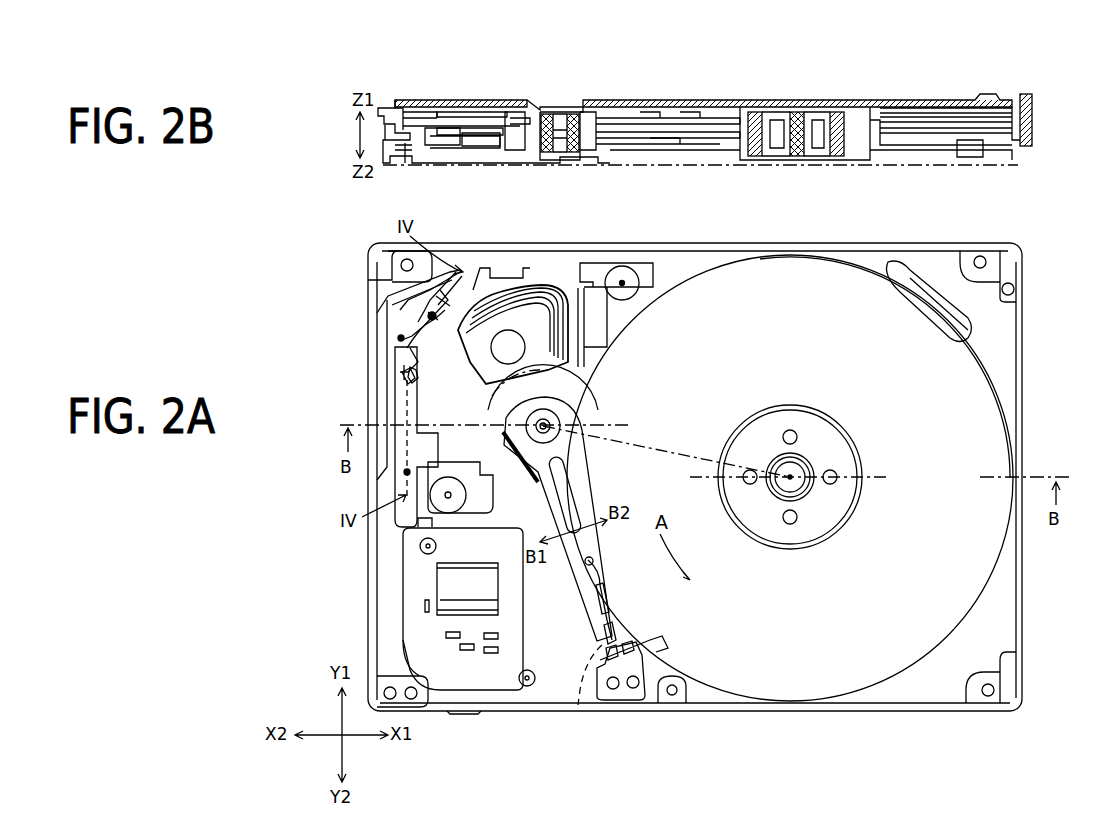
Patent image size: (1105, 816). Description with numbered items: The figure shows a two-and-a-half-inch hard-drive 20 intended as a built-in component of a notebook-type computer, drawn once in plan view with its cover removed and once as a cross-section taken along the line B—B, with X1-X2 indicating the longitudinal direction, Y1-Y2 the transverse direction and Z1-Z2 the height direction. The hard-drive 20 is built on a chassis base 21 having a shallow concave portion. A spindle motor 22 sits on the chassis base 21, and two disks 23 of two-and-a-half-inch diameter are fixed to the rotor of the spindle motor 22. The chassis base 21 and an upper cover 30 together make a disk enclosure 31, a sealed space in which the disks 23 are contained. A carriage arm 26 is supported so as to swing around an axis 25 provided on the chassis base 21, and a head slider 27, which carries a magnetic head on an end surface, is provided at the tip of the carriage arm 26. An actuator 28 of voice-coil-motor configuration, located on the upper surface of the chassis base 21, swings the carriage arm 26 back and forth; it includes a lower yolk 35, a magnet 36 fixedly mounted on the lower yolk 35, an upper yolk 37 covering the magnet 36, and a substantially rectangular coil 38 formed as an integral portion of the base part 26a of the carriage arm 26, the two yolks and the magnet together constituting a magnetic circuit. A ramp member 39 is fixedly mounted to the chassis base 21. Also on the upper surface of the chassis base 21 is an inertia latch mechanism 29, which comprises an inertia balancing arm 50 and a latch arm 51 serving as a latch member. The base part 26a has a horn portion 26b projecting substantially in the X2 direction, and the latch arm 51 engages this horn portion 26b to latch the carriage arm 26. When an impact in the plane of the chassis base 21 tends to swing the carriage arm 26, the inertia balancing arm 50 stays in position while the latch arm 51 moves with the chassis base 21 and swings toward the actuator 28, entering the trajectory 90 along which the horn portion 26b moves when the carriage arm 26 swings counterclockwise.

In FIG. 2B, the hard-drive 20 is at (957, 21).
In FIG. 2A, the hard-drive 20 is at (977, 216).
In FIG. 2B, the chassis base 21 is at (1022, 150).
In FIG. 2A, the chassis base 21 is at (893, 703).
In FIG. 2B, the spindle motor 22 is at (758, 112).
In FIG. 2B, the disks 23 is at (922, 108).
In FIG. 2A, the disks 23 is at (984, 412).
In FIG. 2B, the axis 25 is at (560, 158).
In FIG. 2A, the axis 25 is at (552, 422).
In FIG. 2B, the carriage arm 26 is at (600, 110).
In FIG. 2A, the carriage arm 26 is at (570, 445).
In FIG. 2A, the base part of the carriage arm 26a is at (572, 328).
In FIG. 2A, the horn portion 26b is at (420, 365).
In FIG. 2A, the head slider 27 is at (580, 710).
In FIG. 2B, the actuator 28 is at (450, 148).
In FIG. 2A, the actuator 28 is at (402, 380).
In FIG. 2A, the inertia latch mechanism 29 is at (383, 326).
In FIG. 2B, the upper cover 30 is at (676, 100).
In FIG. 2B, the disk enclosure 31 is at (1041, 90).
In FIG. 2B, the lower yolk 35 is at (474, 148).
In FIG. 2B, the magnet 36 is at (494, 150).
In FIG. 2B, the upper yolk 37 is at (478, 112).
In FIG. 2A, the coil 38 is at (544, 306).
In FIG. 2A, the ramp member 39 is at (625, 690).
In FIG. 2A, the inertia balancing arm 50 is at (390, 452).
In FIG. 2A, the latch arm 51 is at (424, 327).
In FIG. 2A, the trajectory 90 is at (431, 394).